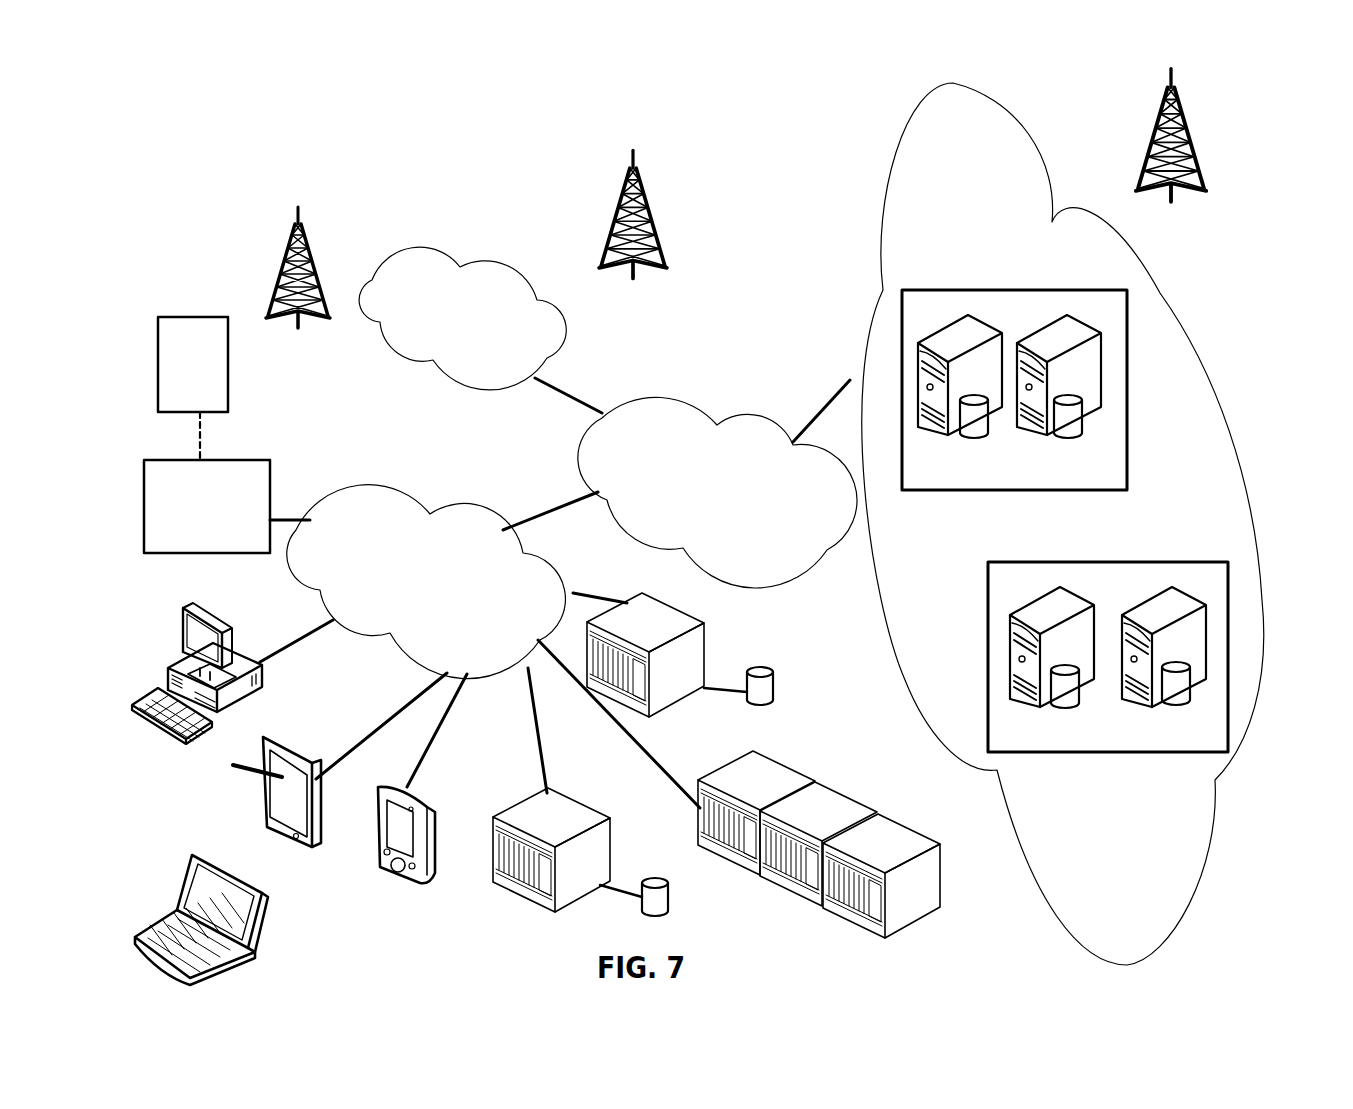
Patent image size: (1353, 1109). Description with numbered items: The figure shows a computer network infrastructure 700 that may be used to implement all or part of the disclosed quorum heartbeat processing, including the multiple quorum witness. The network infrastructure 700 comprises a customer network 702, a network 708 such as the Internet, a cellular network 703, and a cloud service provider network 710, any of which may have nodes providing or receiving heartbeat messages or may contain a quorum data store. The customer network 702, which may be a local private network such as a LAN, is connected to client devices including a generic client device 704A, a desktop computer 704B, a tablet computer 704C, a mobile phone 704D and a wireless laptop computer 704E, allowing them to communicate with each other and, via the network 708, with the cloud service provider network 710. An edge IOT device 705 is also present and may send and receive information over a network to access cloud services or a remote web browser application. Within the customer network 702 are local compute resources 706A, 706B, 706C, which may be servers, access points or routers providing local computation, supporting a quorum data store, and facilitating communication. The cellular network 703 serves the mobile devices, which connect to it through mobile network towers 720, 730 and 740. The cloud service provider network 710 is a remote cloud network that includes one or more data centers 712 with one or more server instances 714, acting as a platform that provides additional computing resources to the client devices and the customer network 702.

The network infrastructure 700 is at (383, 178).
The customer network 702 is at (400, 495).
The cellular network 703 is at (487, 270).
The client device 704A is at (237, 460).
The desktop computer 704B is at (212, 620).
The tablet computer 704C is at (290, 740).
The mobile phone 704D is at (425, 802).
The laptop computer 704E is at (263, 897).
The edge IOT device 705 is at (173, 317).
The local compute resource 706A is at (555, 817).
The local compute resource 706B is at (705, 647).
The local compute resource 706C is at (773, 762).
The network 708 is at (657, 395).
The cloud service provider network 710 is at (1170, 292).
The data center 712 is at (943, 290).
The server instance 714 is at (968, 433).
The mobile network tower 720 is at (633, 230).
The mobile network tower 730 is at (298, 287).
The mobile network tower 740 is at (1171, 150).